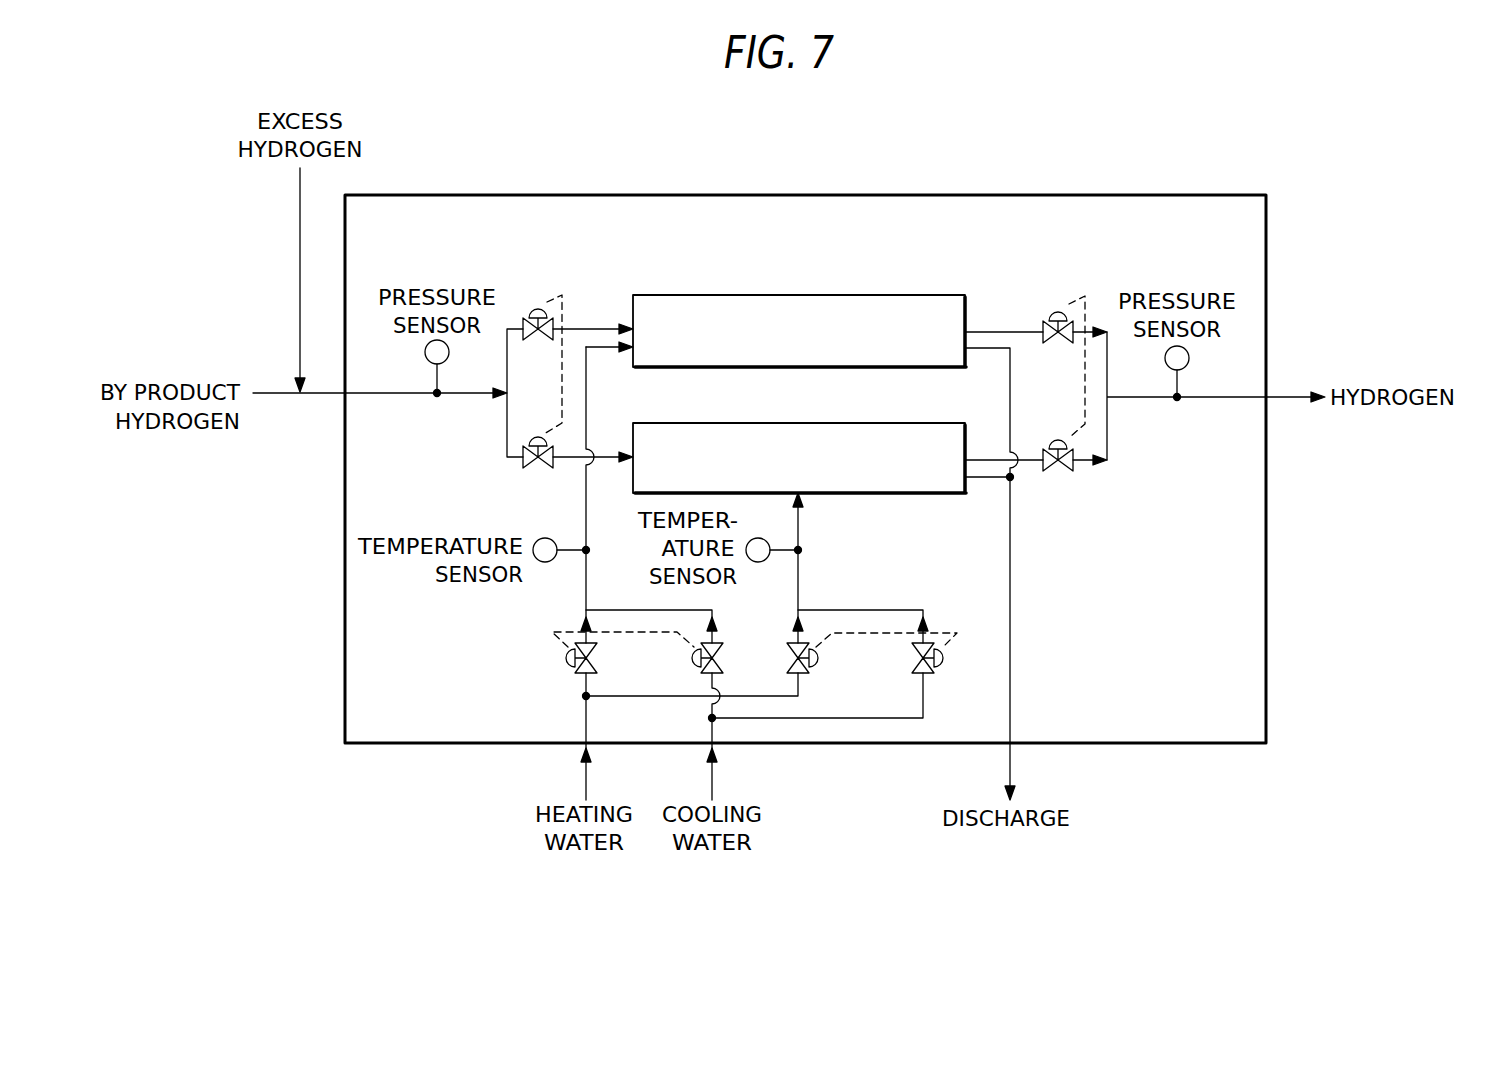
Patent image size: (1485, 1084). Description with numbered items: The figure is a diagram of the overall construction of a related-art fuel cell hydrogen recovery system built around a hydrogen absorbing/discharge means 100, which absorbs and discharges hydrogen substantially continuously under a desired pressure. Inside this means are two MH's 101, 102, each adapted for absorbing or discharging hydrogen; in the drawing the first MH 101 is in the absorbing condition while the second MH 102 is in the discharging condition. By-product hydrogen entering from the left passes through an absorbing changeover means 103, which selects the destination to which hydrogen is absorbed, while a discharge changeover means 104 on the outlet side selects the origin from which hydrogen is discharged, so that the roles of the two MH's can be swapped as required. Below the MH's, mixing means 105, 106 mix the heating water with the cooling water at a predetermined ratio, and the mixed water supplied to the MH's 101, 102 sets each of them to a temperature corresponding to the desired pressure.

The hydrogen absorbing/discharge means 100 is at (1030, 187).
The MH 101 is at (800, 295).
The MH 102 is at (802, 423).
The absorbing changeover means 103 is at (538, 295).
The discharge changeover means 104 is at (1042, 318).
The mixing means 105 is at (546, 650).
The mixing means 106 is at (948, 667).